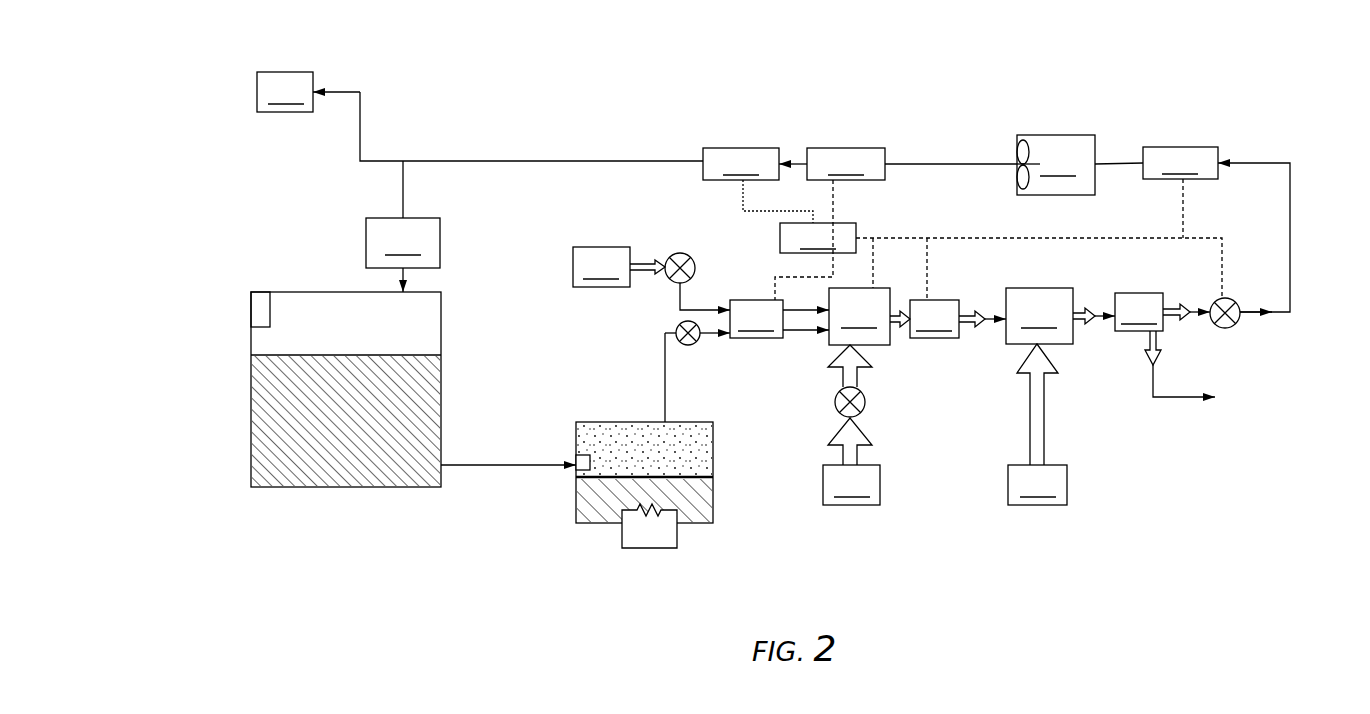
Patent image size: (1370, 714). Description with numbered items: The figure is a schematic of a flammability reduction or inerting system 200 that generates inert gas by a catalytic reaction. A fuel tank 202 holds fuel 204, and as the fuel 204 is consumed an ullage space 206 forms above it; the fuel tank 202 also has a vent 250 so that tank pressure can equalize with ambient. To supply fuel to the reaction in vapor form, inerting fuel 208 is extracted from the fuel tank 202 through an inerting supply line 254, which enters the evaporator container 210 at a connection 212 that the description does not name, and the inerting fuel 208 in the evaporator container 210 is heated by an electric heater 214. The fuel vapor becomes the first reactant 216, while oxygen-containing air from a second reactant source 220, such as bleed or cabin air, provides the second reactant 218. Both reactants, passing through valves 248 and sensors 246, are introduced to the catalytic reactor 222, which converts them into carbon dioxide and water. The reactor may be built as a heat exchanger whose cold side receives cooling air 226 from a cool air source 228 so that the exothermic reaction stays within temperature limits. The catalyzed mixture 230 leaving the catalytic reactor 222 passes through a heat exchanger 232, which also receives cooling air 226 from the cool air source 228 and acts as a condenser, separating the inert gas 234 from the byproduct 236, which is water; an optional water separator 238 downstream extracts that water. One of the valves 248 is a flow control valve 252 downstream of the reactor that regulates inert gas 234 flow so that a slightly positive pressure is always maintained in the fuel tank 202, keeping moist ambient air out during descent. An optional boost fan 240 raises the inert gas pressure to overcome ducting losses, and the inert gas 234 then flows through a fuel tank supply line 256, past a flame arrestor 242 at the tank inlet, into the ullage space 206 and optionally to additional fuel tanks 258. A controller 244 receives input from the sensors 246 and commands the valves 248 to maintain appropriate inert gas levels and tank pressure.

The inerting system 200 is at (430, 84).
The fuel tank 202 is at (326, 290).
The fuel 204 is at (338, 467).
The ullage space 206 is at (413, 334).
The inerting fuel 208 is at (703, 500).
The evaporator container 210 is at (593, 421).
The liquid inlet 212 is at (572, 470).
The electric heater 214 is at (679, 540).
The first reactant 216 is at (703, 446).
The second reactant 218 is at (650, 262).
The second reactant source 220 is at (601, 267).
The catalytic reactor 222 is at (859, 316).
The cooling air 226 is at (858, 372).
The cool air source 228 is at (945, 485).
The catalyzed mixture 230 is at (896, 300).
The heat exchanger 232 is at (1060, 316).
The inert gas 234 is at (1176, 308).
The byproduct 236 is at (1145, 348).
The water separator 238 is at (1139, 312).
The boost fan 240 is at (1056, 165).
The flame arrestor 242 is at (403, 226).
The controller 244 is at (818, 238).
The sensors 246 is at (959, 242).
The valves 248 is at (689, 255).
The vent 250 is at (262, 292).
The flow control valve 252 is at (1226, 335).
The inerting supply line 254 is at (486, 468).
The fuel tank supply line 256 is at (516, 160).
The additional fuel tanks 258 is at (285, 92).